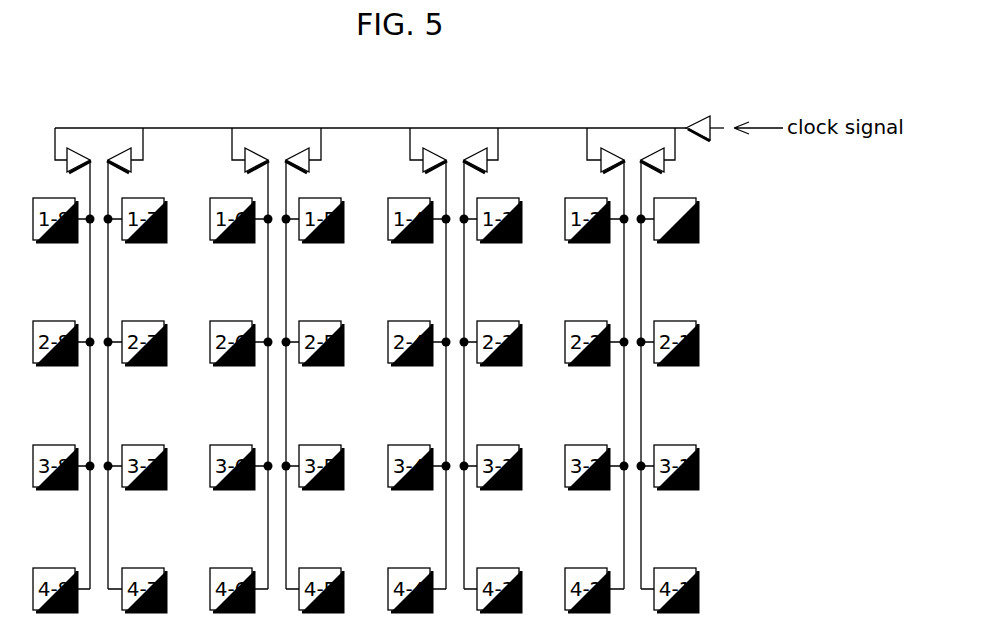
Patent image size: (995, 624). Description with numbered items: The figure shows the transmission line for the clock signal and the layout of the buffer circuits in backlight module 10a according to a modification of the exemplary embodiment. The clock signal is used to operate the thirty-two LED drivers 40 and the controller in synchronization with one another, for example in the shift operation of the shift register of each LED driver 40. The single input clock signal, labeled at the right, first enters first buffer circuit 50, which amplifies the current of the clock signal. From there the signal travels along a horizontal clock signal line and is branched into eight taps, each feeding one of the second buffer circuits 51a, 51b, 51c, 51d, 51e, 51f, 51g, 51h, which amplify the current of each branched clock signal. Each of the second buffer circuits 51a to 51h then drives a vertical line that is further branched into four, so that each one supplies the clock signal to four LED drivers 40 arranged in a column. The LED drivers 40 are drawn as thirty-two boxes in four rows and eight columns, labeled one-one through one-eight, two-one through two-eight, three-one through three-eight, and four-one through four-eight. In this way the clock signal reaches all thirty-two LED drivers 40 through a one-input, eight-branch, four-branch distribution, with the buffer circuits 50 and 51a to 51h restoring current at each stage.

The backlight module 10a is at (104, 90).
The LED driver 40 is at (698, 214).
The first buffer circuit 50 is at (708, 116).
The second buffer circuit 51a is at (659, 171).
The second buffer circuit 51b is at (606, 171).
The second buffer circuit 51c is at (482, 171).
The second buffer circuit 51d is at (428, 171).
The second buffer circuit 51e is at (304, 171).
The second buffer circuit 51f is at (250, 171).
The second buffer circuit 51g is at (126, 171).
The second buffer circuit 51h is at (72, 171).